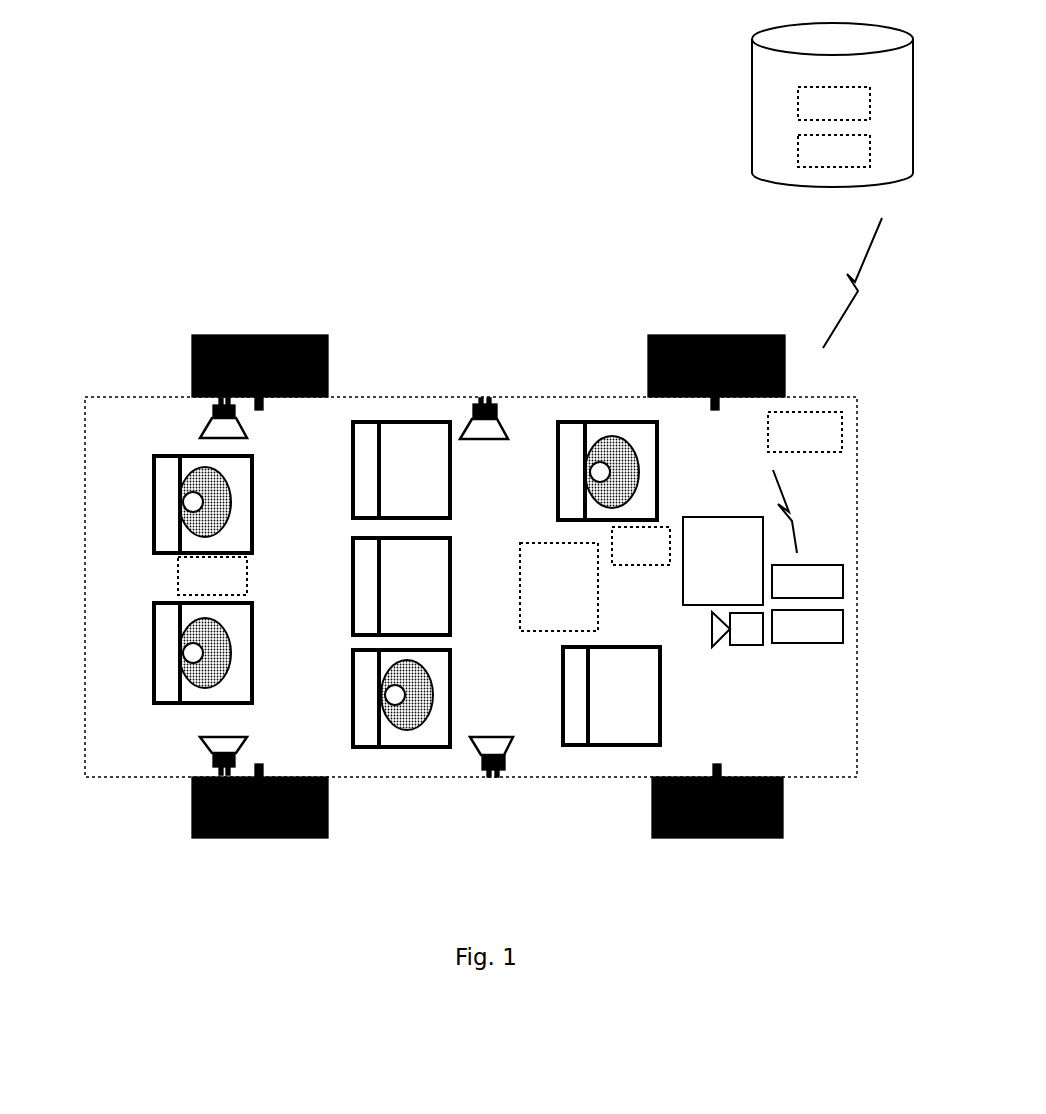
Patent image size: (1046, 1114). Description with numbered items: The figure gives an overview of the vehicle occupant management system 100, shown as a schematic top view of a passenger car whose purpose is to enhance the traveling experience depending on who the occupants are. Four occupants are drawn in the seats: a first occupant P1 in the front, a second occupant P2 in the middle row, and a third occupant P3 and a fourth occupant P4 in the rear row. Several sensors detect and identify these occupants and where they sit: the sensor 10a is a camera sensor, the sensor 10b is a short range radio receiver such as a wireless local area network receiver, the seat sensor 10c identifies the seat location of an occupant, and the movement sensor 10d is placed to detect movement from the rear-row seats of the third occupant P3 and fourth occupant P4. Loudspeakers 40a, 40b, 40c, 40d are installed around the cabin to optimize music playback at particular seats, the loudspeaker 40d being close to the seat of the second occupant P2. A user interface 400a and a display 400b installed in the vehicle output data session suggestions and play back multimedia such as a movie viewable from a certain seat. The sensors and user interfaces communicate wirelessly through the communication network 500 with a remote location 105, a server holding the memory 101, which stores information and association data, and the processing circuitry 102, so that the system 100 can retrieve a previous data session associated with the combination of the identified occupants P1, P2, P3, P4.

The vehicle occupant management system 100 is at (288, 278).
The remote location / server 105 is at (726, 110).
The memory 101 is at (821, 342).
The processing circuitry 102 is at (821, 389).
The communication network 500 is at (827, 385).
The camera sensor 10a is at (747, 655).
The short range radio receiver 10b is at (805, 432).
The seat sensor 10c is at (641, 546).
The movement sensor 10d is at (212, 576).
The loudspeaker 40a is at (197, 422).
The loudspeaker 40b is at (502, 415).
The loudspeaker 40c is at (197, 757).
The loudspeaker 40d is at (512, 757).
The user interface 400a is at (723, 561).
The display 400b is at (559, 587).
The first occupant P1 is at (637, 468).
The second occupant P2 is at (435, 693).
The third occupant P3 is at (230, 500).
The fourth occupant P4 is at (232, 652).